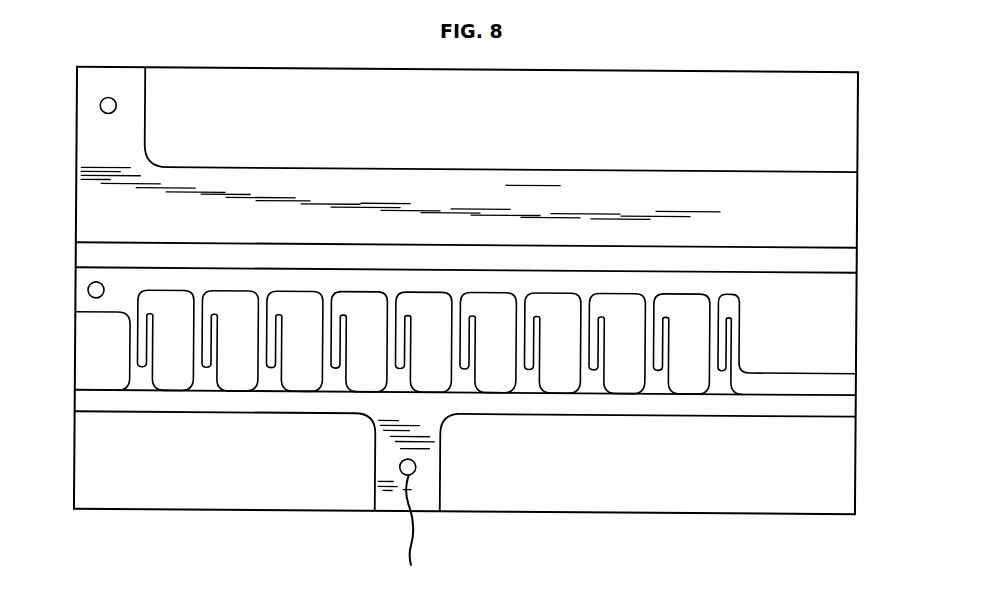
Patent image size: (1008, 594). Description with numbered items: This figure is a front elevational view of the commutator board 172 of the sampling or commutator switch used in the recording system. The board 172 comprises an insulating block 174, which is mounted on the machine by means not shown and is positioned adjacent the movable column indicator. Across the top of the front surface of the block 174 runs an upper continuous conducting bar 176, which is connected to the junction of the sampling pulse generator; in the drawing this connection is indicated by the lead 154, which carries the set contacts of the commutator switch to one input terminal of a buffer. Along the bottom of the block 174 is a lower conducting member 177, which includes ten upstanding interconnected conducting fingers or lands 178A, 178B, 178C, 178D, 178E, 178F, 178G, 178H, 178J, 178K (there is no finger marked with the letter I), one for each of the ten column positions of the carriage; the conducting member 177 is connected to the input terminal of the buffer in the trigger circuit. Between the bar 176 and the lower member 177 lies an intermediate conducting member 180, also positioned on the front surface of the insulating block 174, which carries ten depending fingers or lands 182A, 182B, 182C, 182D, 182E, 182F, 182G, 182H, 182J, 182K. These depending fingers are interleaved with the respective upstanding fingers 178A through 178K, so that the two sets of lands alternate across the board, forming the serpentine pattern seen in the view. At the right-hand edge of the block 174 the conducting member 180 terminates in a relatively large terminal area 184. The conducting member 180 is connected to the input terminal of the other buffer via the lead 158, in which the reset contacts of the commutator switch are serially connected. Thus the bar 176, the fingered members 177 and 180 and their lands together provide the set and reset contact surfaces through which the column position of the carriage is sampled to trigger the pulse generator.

The lead 154 is at (107, 99).
The lead 158 is at (63, 287).
The commutator board 172 is at (210, 515).
The insulating block 174 is at (615, 478).
The upper continuous conducting bar 176 is at (831, 209).
The lower conducting member 177 is at (394, 487).
The conducting finger 178A is at (724, 366).
The conducting finger 178B is at (659, 366).
The conducting finger 178C is at (594, 366).
The conducting finger 178D is at (530, 366).
The conducting finger 178E is at (466, 366).
The conducting finger 178F is at (401, 366).
The conducting finger 178G is at (336, 366).
The conducting finger 178H is at (272, 366).
The conducting finger 178J is at (208, 366).
The conducting finger 178K is at (143, 366).
The intermediate conducting member 180 is at (622, 293).
The depending finger 182A is at (717, 316).
The depending finger 182B is at (650, 316).
The depending finger 182C is at (585, 318).
The depending finger 182D is at (520, 318).
The depending finger 182E is at (456, 318).
The depending finger 182F is at (392, 318).
The depending finger 182G is at (327, 318).
The depending finger 182H is at (262, 318).
The depending finger 182J is at (198, 318).
The depending finger 182K is at (134, 343).
The terminal area 184 is at (797, 345).